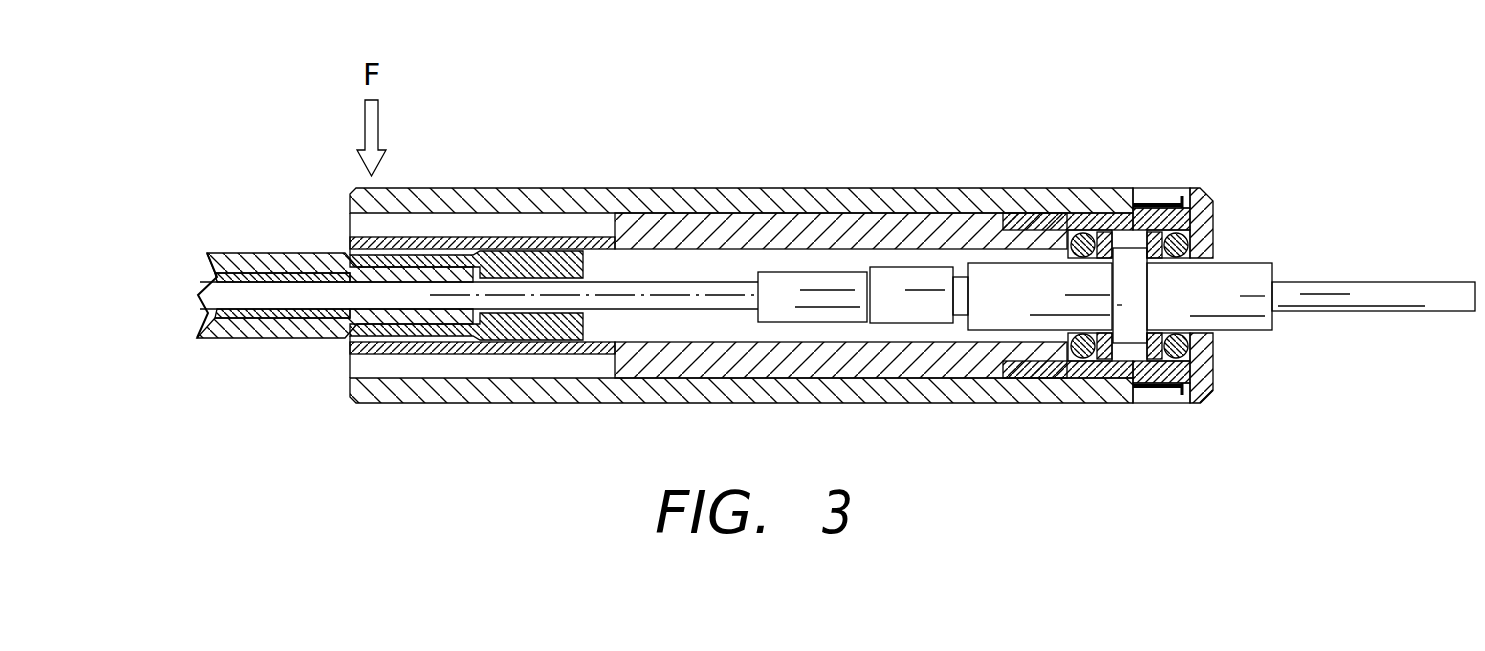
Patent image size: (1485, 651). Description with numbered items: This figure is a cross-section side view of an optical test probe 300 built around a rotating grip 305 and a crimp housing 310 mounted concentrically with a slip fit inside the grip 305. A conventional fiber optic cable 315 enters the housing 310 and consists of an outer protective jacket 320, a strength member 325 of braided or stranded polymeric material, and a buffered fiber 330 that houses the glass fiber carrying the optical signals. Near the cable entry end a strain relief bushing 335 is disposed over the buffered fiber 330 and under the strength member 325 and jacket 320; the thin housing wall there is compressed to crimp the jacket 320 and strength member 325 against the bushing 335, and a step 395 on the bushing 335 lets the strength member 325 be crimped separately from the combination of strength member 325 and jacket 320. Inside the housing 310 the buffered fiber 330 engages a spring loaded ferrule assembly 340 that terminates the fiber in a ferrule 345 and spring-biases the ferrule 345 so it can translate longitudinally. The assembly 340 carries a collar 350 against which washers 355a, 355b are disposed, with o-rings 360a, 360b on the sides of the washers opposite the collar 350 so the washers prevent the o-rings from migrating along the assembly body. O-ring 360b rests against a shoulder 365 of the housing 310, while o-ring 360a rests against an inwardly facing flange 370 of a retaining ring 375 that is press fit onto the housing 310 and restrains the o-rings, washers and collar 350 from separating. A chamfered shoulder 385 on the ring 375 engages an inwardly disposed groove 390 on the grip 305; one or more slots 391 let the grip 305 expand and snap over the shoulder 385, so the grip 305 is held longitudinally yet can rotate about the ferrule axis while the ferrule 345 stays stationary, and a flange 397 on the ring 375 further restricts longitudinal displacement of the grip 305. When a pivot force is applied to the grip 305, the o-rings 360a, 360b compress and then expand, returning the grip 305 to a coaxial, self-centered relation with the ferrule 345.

The probe 300 is at (777, 148).
The rotating grip 305 is at (668, 188).
The crimp housing 310 is at (910, 225).
The fiber optic cable 315 is at (252, 348).
The outer protective jacket 320 is at (218, 252).
The strength member 325 is at (303, 282).
The buffered fiber 330 is at (213, 296).
The strain relief bushing 335 is at (577, 325).
The spring loaded ferrule assembly 340 is at (978, 318).
The ferrule 345 is at (1420, 293).
The collar 350 is at (1137, 280).
The washer 355a is at (1148, 372).
The washer 355b is at (1112, 372).
The o-ring 360a is at (1209, 393).
The o-ring 360b is at (1067, 340).
The shoulder 365 is at (1043, 228).
The inwardly facing flange 370 is at (1213, 348).
The retaining ring 375 is at (1217, 381).
The chamfered shoulder 385 is at (1157, 204).
The groove 390 is at (1120, 215).
The slot 391 is at (1180, 188).
The step 395 is at (483, 250).
The flange 397 is at (1207, 200).